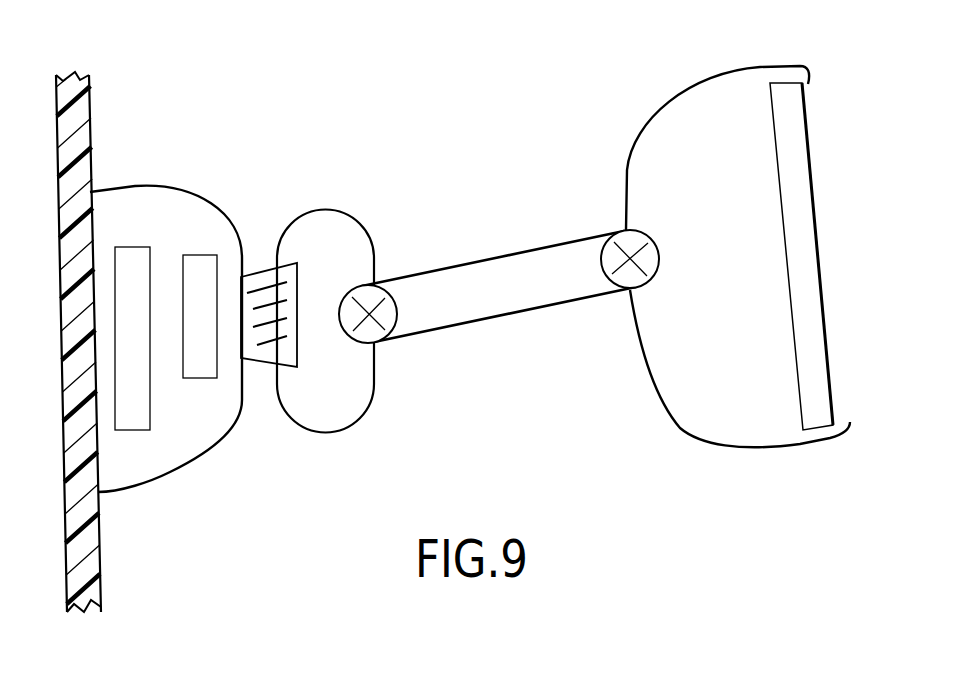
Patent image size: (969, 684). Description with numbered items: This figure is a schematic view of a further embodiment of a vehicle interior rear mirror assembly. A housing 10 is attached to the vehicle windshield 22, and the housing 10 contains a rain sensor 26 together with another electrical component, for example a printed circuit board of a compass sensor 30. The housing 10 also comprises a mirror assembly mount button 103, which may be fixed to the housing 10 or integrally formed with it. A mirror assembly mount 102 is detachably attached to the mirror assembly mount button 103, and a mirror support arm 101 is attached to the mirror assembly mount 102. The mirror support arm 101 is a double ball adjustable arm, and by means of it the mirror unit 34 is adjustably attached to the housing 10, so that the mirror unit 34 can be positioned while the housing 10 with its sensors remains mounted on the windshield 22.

The vehicle windshield 22 is at (90, 115).
The housing 10 is at (170, 175).
The rain sensor 26 is at (137, 413).
The compass sensor 30 is at (203, 365).
The mirror assembly mount button 103 is at (262, 293).
The mirror assembly mount 102 is at (328, 232).
The mirror support arm 101 is at (480, 312).
The mirror unit 34 is at (748, 425).